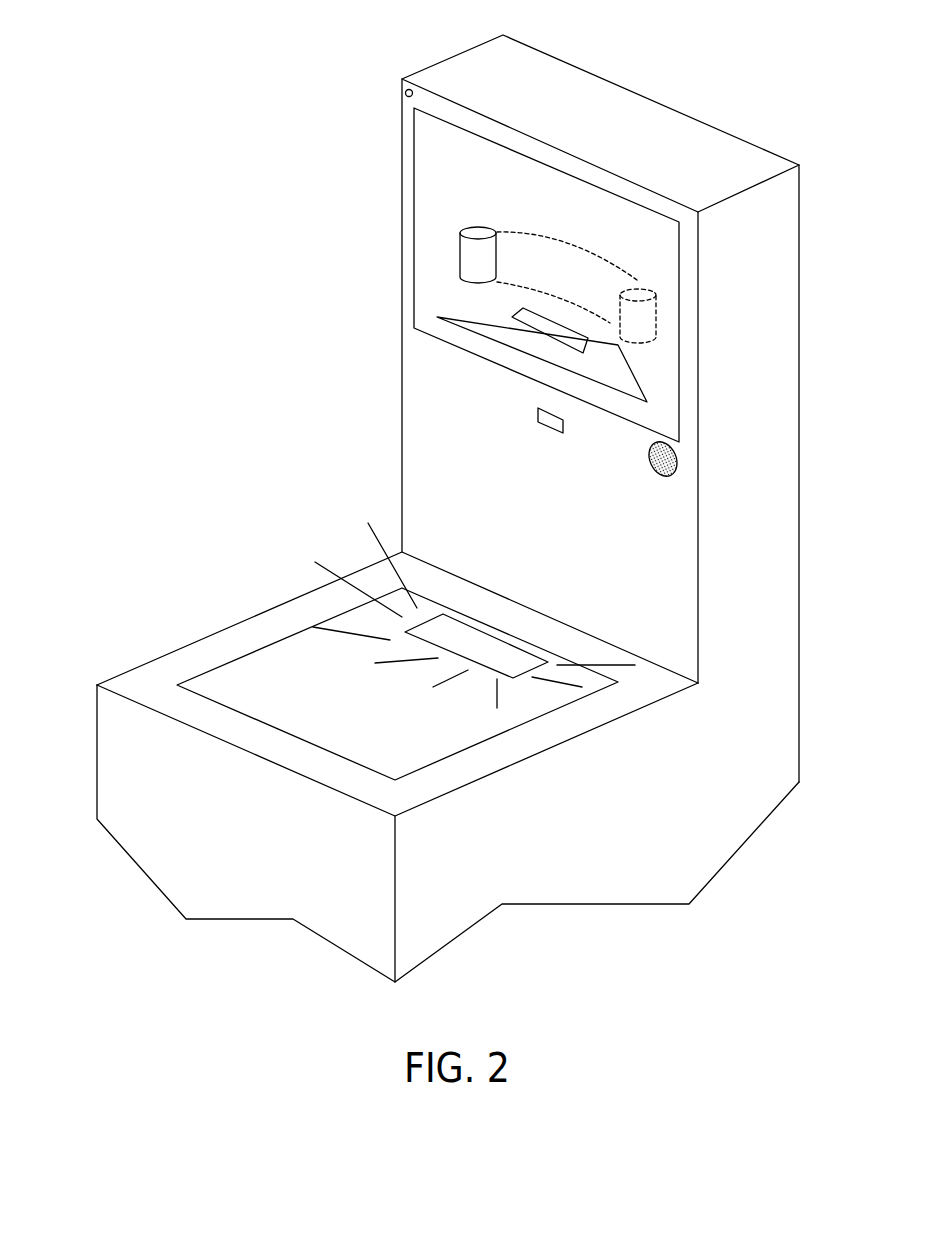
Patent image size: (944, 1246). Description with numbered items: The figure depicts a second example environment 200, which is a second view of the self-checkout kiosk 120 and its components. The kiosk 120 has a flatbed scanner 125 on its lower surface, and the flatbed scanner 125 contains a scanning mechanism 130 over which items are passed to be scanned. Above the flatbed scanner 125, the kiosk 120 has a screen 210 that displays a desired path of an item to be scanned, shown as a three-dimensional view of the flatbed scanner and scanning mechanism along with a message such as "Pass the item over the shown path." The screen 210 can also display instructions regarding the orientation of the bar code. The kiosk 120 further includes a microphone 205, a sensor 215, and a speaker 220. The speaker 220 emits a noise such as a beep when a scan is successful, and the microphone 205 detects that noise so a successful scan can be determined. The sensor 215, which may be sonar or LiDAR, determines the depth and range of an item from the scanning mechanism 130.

The second example environment 200 is at (237, 57).
The self-checkout kiosk 120 is at (592, 102).
The flatbed scanner 125 is at (247, 670).
The scanning mechanism 130 is at (480, 638).
The microphone 205 is at (404, 91).
The screen 210 is at (430, 192).
The sensor 215 is at (553, 421).
The speaker 220 is at (657, 470).